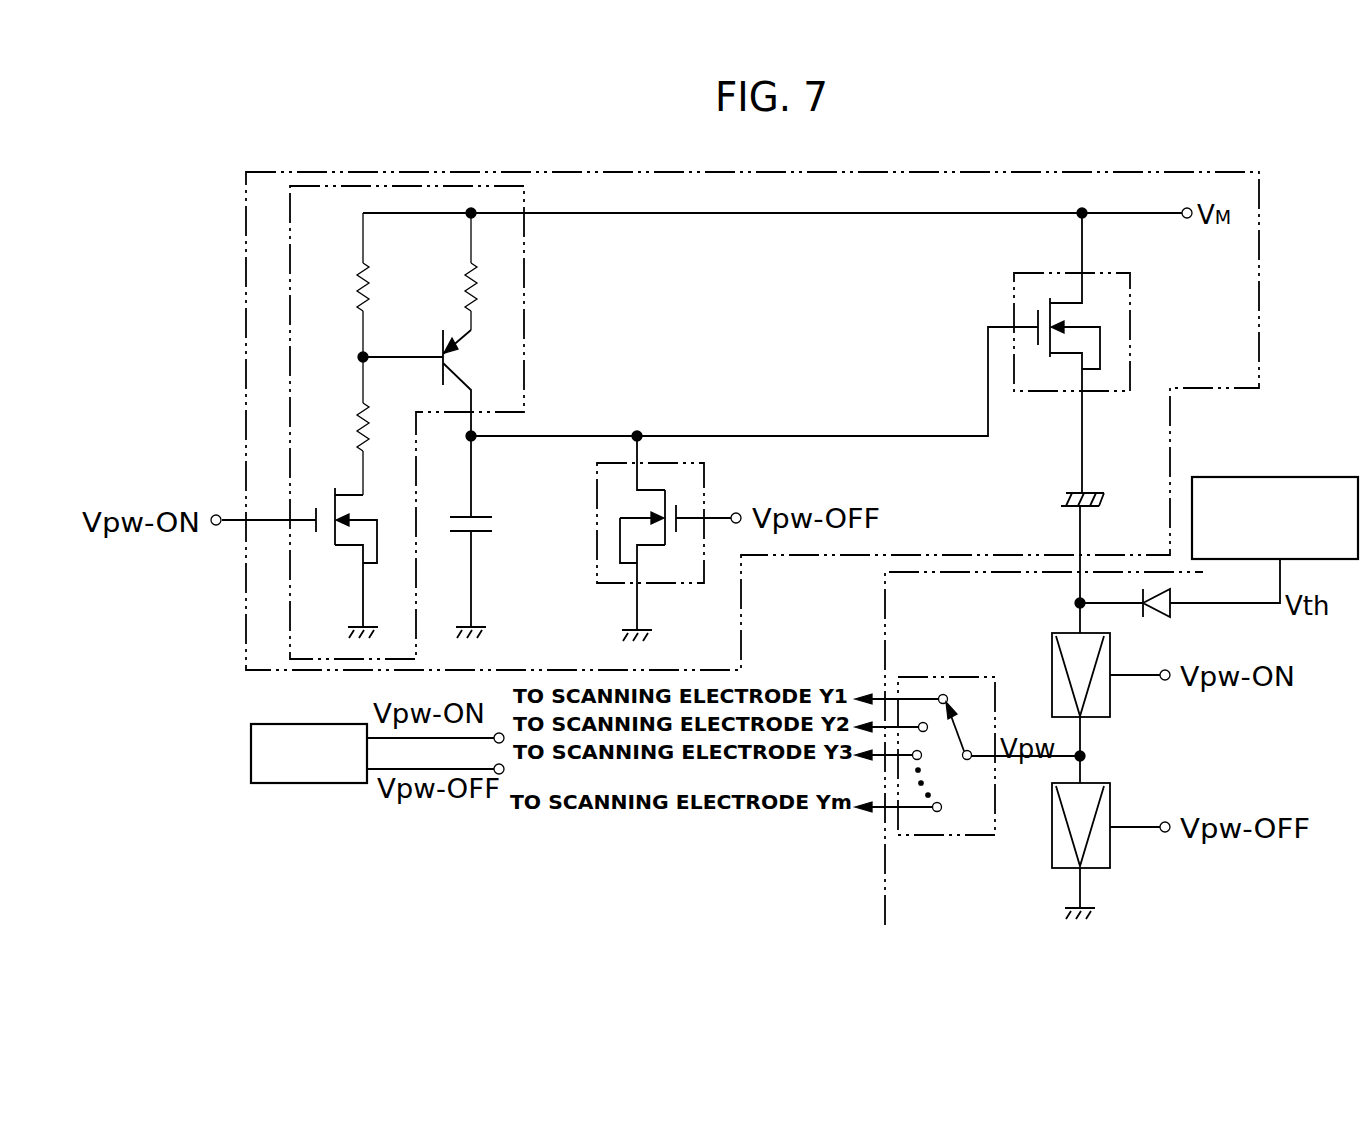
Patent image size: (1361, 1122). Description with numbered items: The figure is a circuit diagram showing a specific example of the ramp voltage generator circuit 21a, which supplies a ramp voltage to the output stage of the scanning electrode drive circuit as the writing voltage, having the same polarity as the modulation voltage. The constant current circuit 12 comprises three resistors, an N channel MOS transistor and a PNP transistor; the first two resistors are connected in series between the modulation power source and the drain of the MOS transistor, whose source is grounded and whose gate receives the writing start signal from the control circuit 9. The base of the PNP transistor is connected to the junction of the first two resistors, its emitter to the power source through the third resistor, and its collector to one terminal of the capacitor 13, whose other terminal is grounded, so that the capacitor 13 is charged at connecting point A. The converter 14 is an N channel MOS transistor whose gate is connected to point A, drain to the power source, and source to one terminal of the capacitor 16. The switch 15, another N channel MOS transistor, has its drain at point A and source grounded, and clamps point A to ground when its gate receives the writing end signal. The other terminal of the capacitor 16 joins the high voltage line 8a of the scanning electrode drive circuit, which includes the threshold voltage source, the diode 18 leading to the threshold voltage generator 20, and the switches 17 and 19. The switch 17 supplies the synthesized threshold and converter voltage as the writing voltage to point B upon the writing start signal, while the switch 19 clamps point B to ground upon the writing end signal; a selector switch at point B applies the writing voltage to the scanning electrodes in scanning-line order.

The high voltage line 8a is at (1006, 748).
The control circuit 9 is at (251, 724).
The constant current circuit 12 is at (373, 391).
The capacitor 13 is at (476, 512).
The converter 14 is at (1067, 353).
The switch 15 is at (624, 536).
The capacitor 16 is at (1068, 493).
The switch 17 is at (1062, 633).
The diode 18 is at (1167, 613).
The switch 19 is at (1052, 868).
The threshold voltage generator 20 is at (1268, 477).
The ramp voltage generator circuit 21a is at (1247, 292).